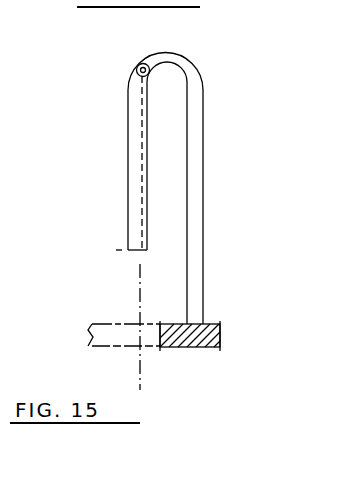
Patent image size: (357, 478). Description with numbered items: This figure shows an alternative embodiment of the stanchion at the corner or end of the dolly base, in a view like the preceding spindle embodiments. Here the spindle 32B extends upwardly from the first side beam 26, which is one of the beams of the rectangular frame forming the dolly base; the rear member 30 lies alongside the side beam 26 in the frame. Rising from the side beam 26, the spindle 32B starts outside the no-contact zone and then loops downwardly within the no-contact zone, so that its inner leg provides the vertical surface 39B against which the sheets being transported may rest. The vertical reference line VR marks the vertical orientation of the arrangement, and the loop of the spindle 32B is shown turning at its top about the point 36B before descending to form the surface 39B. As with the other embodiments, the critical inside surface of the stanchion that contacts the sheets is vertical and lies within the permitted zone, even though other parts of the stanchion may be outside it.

The spindle 32B is at (203, 112).
The vertical surface 39B is at (128, 155).
The pivot / hinge 36B is at (151, 57).
The rear member 30 is at (112, 322).
The first side beam 26 is at (221, 332).
The vertical reference axis VR is at (140, 385).